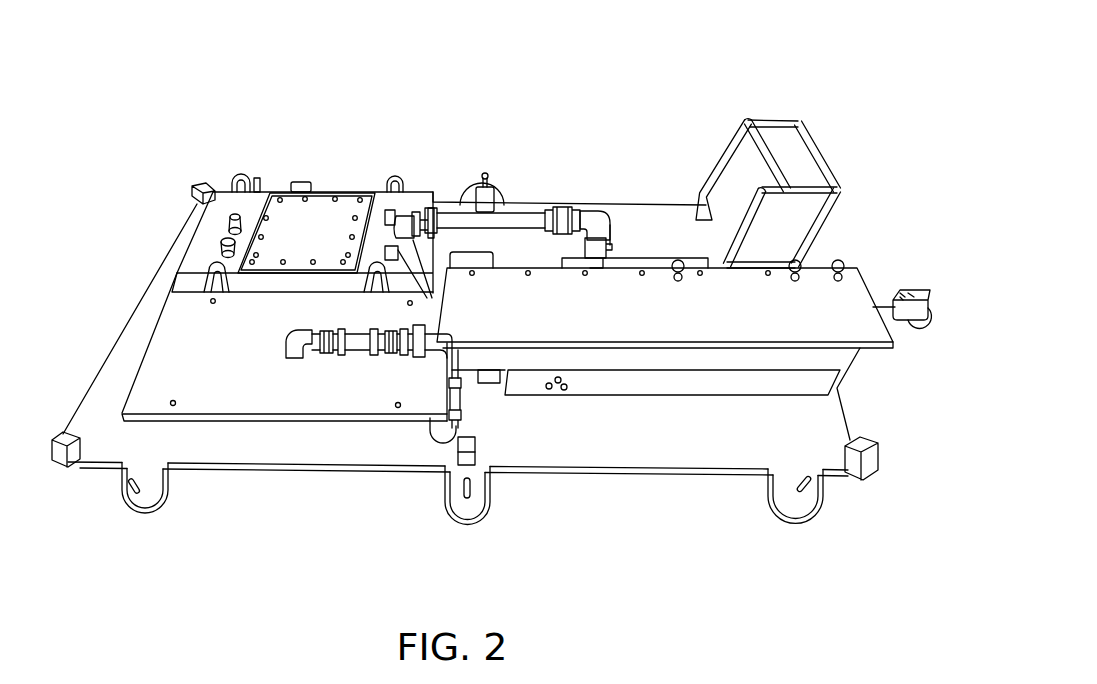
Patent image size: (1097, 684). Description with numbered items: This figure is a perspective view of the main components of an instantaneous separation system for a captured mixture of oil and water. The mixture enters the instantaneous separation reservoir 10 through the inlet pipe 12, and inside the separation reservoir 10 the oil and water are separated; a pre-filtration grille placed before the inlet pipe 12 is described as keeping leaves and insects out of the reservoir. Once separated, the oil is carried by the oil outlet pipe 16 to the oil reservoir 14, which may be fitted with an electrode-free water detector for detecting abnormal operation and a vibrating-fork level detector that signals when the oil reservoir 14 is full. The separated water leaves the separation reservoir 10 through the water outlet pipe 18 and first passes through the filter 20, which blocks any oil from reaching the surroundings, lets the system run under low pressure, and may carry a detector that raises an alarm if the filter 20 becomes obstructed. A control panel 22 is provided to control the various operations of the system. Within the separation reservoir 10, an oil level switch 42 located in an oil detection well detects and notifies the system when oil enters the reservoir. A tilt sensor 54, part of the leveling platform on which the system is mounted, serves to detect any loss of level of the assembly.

The instantaneous separation reservoir 10 is at (650, 303).
The inlet pipe 12 is at (908, 325).
The oil reservoir 14 is at (291, 223).
The oil outlet pipe 16 is at (593, 222).
The water outlet pipe 18 is at (437, 350).
The filter 20 is at (205, 378).
The control panel 22 is at (775, 145).
The oil level switch 42 is at (712, 266).
The tilt sensor 54 is at (470, 256).